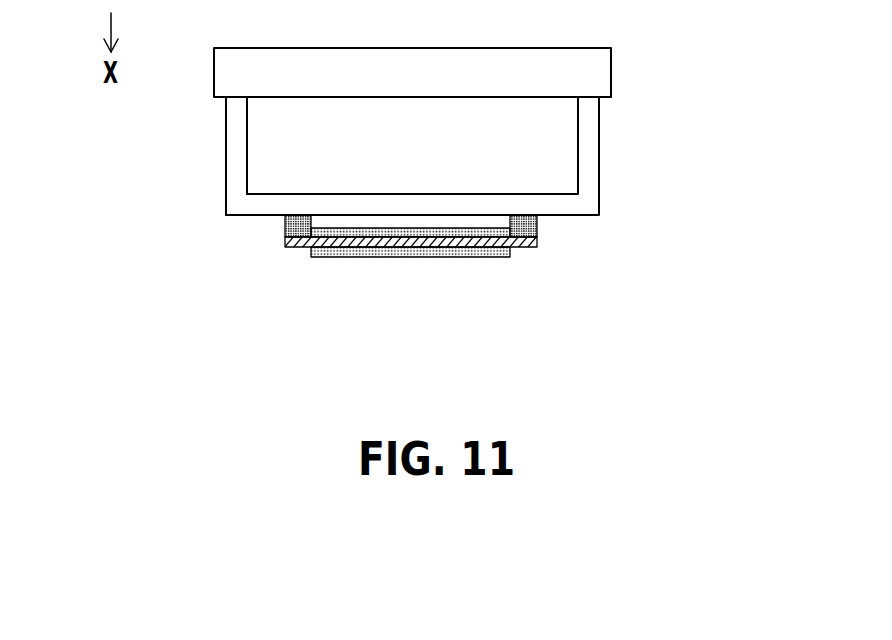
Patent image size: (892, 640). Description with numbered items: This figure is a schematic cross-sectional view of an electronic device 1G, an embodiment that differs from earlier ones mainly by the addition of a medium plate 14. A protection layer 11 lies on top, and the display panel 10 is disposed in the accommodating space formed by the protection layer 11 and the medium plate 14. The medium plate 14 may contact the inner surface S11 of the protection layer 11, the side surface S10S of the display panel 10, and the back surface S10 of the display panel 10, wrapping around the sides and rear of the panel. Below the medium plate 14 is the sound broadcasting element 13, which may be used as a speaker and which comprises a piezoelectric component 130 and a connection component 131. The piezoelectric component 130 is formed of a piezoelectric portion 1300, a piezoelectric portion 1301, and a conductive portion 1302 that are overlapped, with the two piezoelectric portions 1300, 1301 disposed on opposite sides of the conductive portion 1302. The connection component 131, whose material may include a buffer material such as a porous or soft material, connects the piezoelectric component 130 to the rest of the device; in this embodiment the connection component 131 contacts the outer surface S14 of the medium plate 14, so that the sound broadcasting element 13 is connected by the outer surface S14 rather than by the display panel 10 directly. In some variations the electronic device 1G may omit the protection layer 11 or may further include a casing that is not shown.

The protection layer 11 is at (226, 72).
The inner surface of the protection layer S11 is at (241, 98).
The display panel 10 is at (267, 150).
The medium plate 14 is at (239, 205).
The outer surface of the medium plate S14 is at (233, 216).
The back surface of the display panel S10 is at (274, 195).
The side surface of the display panel S10S is at (580, 143).
The sound broadcasting element 13 is at (447, 305).
The piezoelectric component 130 is at (416, 290).
The piezoelectric portion 1300 is at (488, 233).
The piezoelectric portion 1301 is at (410, 279).
The conductive portion 1302 is at (462, 237).
The connection component 131 is at (527, 227).
The electronic device 1G is at (705, 361).